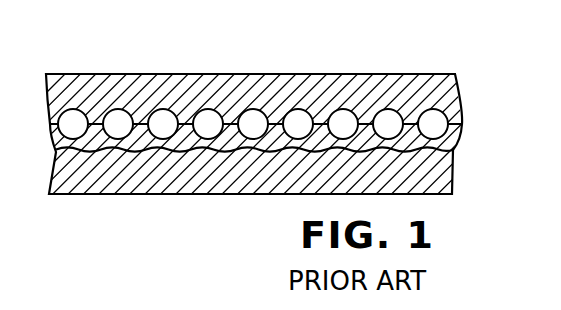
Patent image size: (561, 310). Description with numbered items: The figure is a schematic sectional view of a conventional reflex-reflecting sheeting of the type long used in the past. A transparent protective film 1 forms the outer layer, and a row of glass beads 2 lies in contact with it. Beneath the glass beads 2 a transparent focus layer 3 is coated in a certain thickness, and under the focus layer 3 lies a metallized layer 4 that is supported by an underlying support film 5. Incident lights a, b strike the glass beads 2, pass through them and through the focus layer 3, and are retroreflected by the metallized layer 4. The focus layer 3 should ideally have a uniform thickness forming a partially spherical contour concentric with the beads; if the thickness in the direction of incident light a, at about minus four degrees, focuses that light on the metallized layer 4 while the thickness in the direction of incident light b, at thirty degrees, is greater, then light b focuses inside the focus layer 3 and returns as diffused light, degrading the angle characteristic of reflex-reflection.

The transparent protective film 1 is at (443, 78).
The glass beads 2 is at (438, 118).
The transparent focus layer 3 is at (460, 134).
The metallized layer 4 is at (452, 155).
The support film 5 is at (440, 175).
The incident light a is at (343, 148).
The incident light b is at (242, 146).